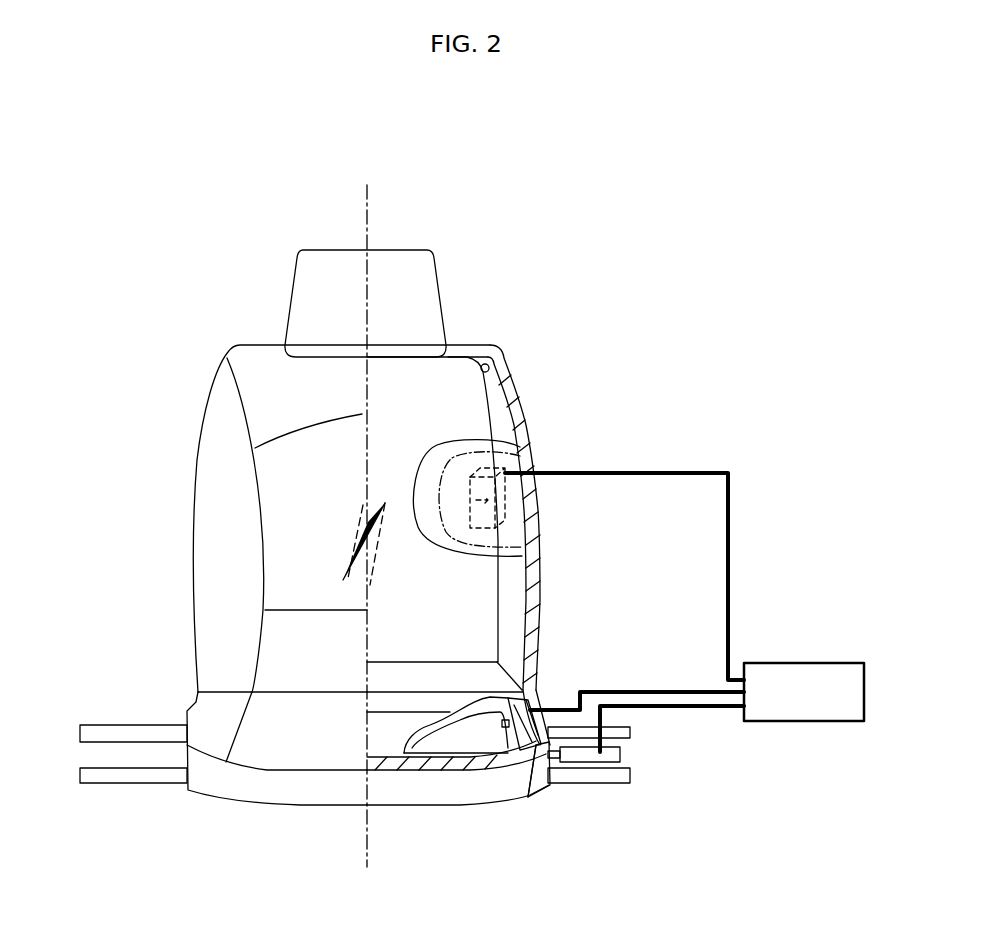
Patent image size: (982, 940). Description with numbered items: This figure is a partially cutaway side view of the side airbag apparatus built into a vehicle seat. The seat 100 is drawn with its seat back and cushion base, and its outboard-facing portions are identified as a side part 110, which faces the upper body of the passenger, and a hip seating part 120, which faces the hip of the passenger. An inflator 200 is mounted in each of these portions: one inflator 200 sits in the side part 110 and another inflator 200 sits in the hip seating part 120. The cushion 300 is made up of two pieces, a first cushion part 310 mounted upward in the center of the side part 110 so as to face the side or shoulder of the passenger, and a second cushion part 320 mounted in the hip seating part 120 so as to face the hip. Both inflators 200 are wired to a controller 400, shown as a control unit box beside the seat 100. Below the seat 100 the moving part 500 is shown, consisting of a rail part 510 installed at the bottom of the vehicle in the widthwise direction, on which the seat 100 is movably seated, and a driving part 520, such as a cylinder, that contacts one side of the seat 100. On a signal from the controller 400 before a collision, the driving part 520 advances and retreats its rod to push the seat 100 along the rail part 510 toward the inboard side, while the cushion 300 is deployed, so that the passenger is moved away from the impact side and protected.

The seat 100 is at (598, 545).
The side part 110 is at (540, 497).
The hip seating part 120 is at (548, 702).
The inflator 200 is at (498, 472).
The cushion 300 is at (290, 596).
The first cushion part 310 is at (432, 502).
The second cushion part 320 is at (460, 740).
The controller 400 is at (803, 663).
The moving part 500 is at (664, 753).
The rail part 510 is at (630, 733).
The driving part 520 is at (620, 755).